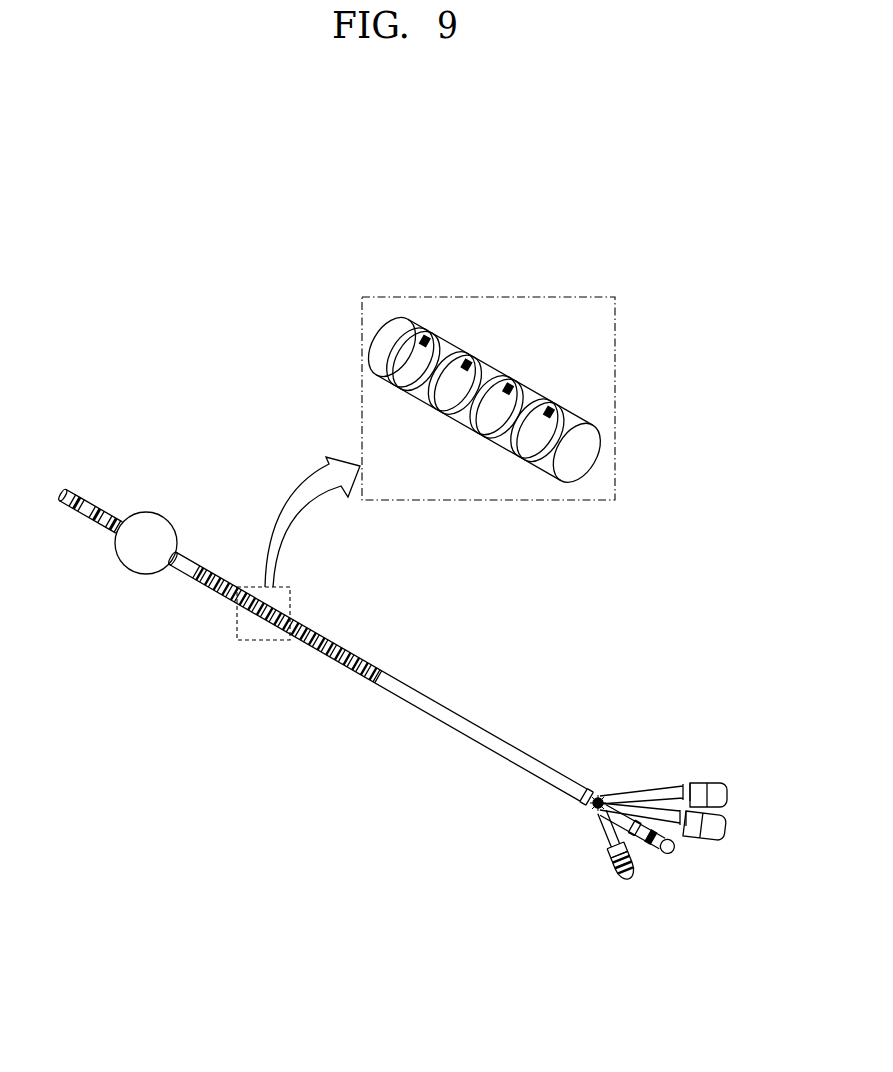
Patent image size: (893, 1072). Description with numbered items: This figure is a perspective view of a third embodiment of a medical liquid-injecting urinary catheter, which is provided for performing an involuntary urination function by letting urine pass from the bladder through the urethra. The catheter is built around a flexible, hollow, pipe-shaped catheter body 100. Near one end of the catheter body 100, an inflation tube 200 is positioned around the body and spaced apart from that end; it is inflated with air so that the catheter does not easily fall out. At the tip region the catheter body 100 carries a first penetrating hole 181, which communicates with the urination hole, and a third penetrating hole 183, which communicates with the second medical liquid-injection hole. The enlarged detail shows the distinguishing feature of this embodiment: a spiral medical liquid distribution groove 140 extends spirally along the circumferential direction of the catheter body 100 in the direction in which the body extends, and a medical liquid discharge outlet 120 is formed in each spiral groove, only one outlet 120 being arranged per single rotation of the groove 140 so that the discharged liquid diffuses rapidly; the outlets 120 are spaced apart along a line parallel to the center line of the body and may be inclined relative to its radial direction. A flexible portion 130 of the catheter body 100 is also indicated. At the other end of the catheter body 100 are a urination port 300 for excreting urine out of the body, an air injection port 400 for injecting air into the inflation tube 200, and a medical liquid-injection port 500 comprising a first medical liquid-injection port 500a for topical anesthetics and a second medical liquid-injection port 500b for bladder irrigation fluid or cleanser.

The catheter body 100 is at (440, 708).
The medical liquid discharge outlet 120 is at (502, 372).
The bendable portion 130 is at (88, 524).
The spiral medical liquid distribution groove 140 is at (487, 408).
The first penetrating hole 181 is at (65, 497).
The third penetrating hole 183 is at (86, 503).
The inflation tube 200 is at (157, 532).
The urination port 300 is at (682, 853).
The air injection port 400 is at (612, 850).
The medical liquid-injection port 500 is at (687, 757).
The first medical liquid-injection port 500a is at (717, 784).
The second medical liquid-injection port 500b is at (690, 793).